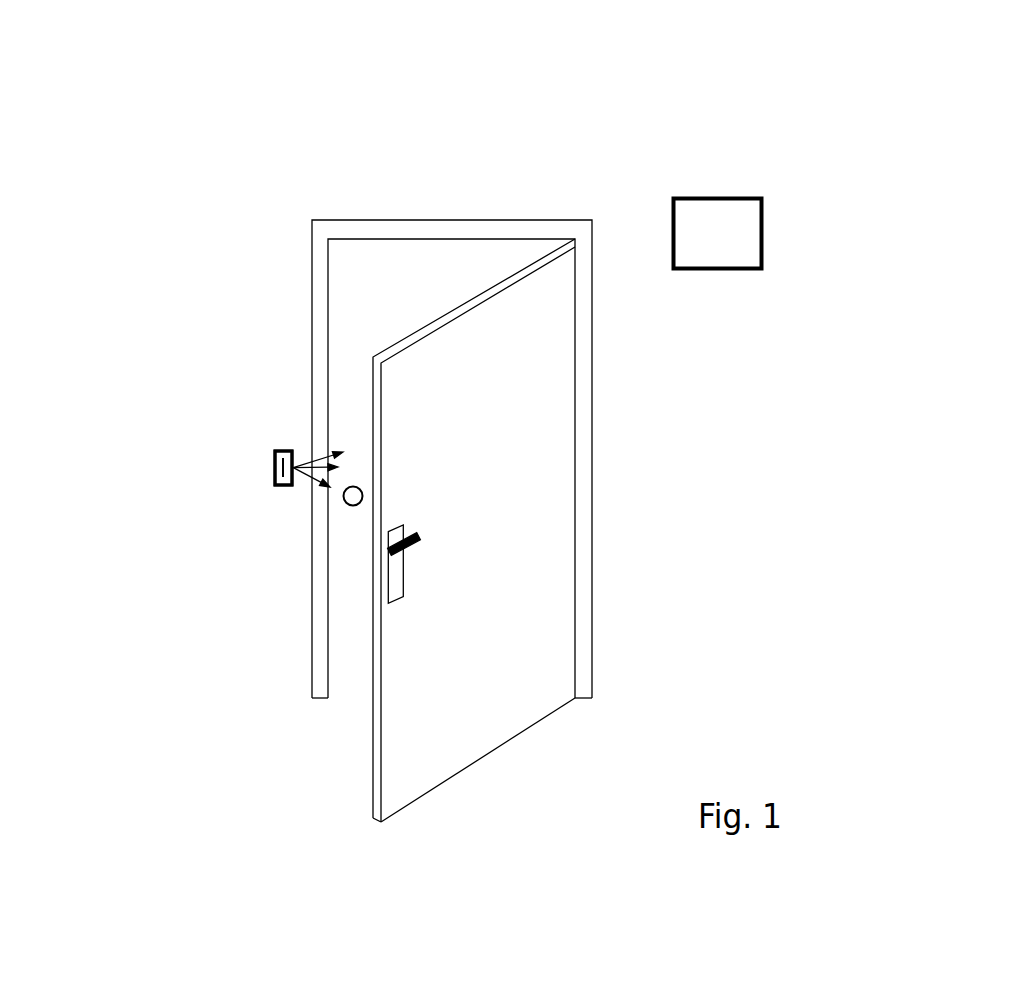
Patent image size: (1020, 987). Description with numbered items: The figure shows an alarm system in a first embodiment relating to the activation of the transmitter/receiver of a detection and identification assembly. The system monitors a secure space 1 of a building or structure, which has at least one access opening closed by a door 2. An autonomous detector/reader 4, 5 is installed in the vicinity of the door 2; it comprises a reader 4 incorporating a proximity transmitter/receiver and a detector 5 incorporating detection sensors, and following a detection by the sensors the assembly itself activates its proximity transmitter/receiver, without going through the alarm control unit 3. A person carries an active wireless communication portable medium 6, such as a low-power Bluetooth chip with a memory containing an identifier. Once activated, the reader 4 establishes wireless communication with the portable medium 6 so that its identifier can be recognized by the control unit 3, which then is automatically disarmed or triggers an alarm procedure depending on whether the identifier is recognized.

The secure space 1 is at (219, 741).
The door 2 is at (282, 202).
The alarm control unit 3 is at (720, 170).
The reader 4 is at (267, 421).
The detector 5 is at (283, 468).
The active wireless communication portable medium 6 is at (345, 502).